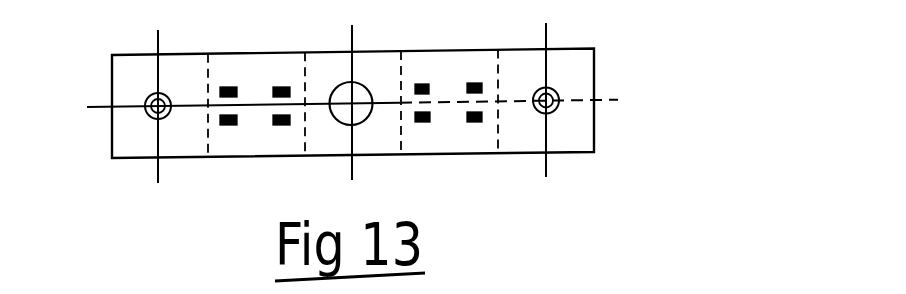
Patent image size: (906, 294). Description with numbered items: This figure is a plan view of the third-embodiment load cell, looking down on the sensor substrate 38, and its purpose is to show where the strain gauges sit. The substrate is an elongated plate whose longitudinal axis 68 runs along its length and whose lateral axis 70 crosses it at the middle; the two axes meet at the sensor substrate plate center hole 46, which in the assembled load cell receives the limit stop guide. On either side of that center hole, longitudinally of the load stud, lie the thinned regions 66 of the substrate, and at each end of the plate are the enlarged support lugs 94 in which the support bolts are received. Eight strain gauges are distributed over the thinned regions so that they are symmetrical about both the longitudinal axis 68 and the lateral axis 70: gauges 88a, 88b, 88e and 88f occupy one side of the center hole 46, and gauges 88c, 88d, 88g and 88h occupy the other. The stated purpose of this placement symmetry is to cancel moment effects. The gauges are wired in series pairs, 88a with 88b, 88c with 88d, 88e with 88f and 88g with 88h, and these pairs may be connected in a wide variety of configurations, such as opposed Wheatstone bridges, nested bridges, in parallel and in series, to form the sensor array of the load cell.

The sensor substrate 38 is at (385, 52).
The sensor substrate plate center hole 46 is at (344, 120).
The thinned regions 66 is at (250, 52).
The longitudinal axis 68 is at (95, 107).
The lateral axis 70 is at (352, 37).
The strain gauge 88a is at (230, 127).
The strain gauge 88b is at (226, 74).
The strain gauge 88c is at (476, 83).
The strain gauge 88d is at (480, 123).
The strain gauge 88e is at (280, 127).
The strain gauge 88f is at (277, 74).
The strain gauge 88g is at (417, 124).
The strain gauge 88h is at (430, 77).
The support lugs 94 is at (122, 86).